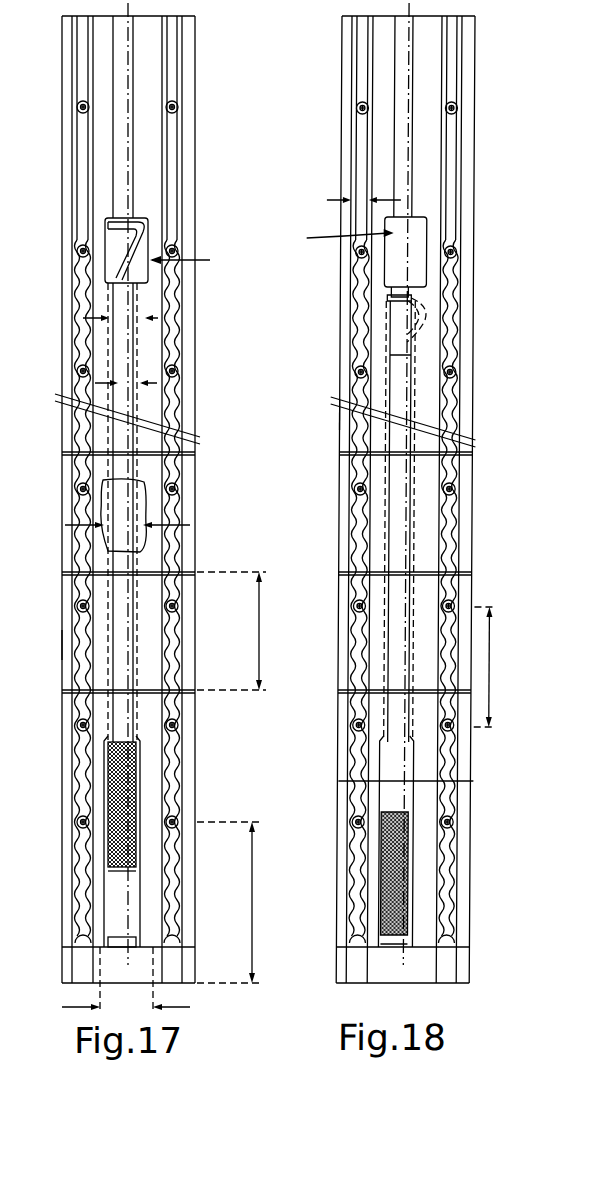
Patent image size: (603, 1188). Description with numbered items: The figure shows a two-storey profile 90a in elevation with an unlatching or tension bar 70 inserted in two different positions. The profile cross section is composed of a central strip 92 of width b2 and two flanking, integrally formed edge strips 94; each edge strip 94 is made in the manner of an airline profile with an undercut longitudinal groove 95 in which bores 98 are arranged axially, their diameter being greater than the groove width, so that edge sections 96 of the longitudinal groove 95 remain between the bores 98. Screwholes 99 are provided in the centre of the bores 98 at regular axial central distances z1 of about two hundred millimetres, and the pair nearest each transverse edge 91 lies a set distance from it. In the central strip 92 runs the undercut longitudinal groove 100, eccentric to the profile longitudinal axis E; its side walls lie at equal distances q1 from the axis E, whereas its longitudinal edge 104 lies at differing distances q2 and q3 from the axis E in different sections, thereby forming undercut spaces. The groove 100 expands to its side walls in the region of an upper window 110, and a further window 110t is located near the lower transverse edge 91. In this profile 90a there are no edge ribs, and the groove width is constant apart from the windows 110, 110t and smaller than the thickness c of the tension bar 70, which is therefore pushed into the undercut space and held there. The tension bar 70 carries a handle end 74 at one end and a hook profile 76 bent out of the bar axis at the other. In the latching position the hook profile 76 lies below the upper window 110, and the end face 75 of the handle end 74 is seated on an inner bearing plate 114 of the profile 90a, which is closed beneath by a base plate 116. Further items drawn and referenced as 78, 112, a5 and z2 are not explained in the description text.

In FIG. 17, the tension bar 70 is at (120, 498).
In FIG. 18, the tension bar 70 is at (398, 372).
In FIG. 17, the handle end 74 is at (110, 803).
In FIG. 18, the handle end 74 is at (390, 885).
In FIG. 17, the end face 75 is at (120, 870).
In FIG. 17, the hook profile 76 is at (135, 265).
In FIG. 18, the hook profile 76 is at (398, 333).
In FIG. 17, the coupling block 78 is at (148, 218).
In FIG. 18, the coupling block 78 is at (402, 296).
In FIG. 17, the two-storey profile 90a is at (48, 648).
In FIG. 18, the two-storey profile 90a is at (336, 413).
In FIG. 18, the transverse edge 91 is at (425, 18).
In FIG. 17, the central strip 92 is at (150, 922).
In FIG. 18, the central strip 92 is at (395, 841).
In FIG. 17, the edge strip 94 is at (66, 100).
In FIG. 17, the longitudinal groove 95 is at (85, 75).
In FIG. 18, the longitudinal groove 95 is at (362, 148).
In FIG. 17, the edge section 96 is at (180, 500).
In FIG. 17, the bore 98 is at (165, 560).
In FIG. 18, the bore 98 is at (361, 633).
In FIG. 18, the screwhole 99 is at (358, 112).
In FIG. 17, the longitudinal groove 100 is at (120, 146).
In FIG. 18, the longitudinal groove 100 is at (402, 70).
In FIG. 17, the longitudinal edge 104 is at (112, 183).
In FIG. 17, the window 110 is at (200, 260).
In FIG. 18, the window 110 is at (335, 238).
In FIG. 17, the window 110t is at (113, 909).
In FIG. 17, the cross strut 112 is at (185, 690).
In FIG. 18, the cross strut 112 is at (343, 572).
In FIG. 17, the inner bearing plate 114 is at (118, 935).
In FIG. 17, the base plate 116 is at (170, 972).
In FIG. 18, the base plate 116 is at (358, 966).
In FIG. 17, the profile longitudinal axis E is at (127, 50).
In FIG. 18, the profile longitudinal axis E is at (408, 50).
In FIG. 17, the thickness of the tension bar c is at (127, 526).
In FIG. 18, the thickness of the tension bar c is at (405, 782).
In FIG. 18, the side wall distance q1 is at (328, 200).
In FIG. 17, the longitudinal edge distance q2 is at (118, 322).
In FIG. 17, the longitudinal edge distance q3 is at (130, 381).
In FIG. 17, the strut spacing a5 is at (237, 631).
In FIG. 18, the axial central distance z1 is at (488, 667).
In FIG. 17, the travel dimension z2 is at (232, 902).
In FIG. 17, the width of the central strip b2 is at (126, 985).